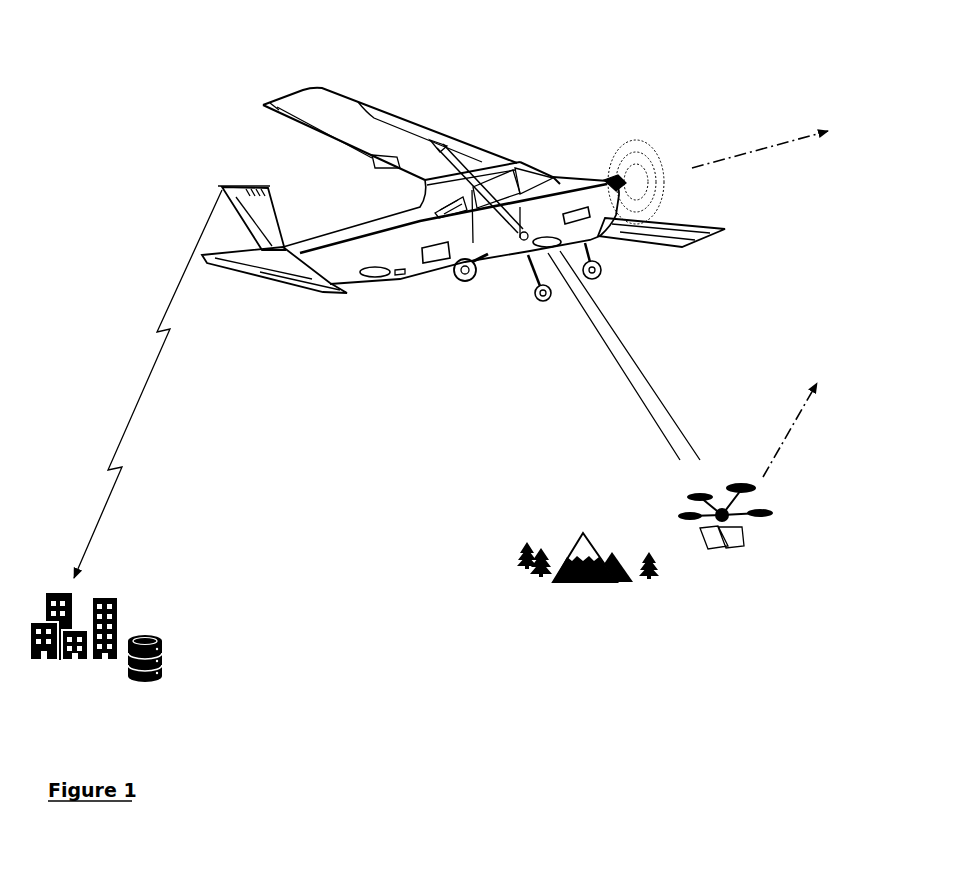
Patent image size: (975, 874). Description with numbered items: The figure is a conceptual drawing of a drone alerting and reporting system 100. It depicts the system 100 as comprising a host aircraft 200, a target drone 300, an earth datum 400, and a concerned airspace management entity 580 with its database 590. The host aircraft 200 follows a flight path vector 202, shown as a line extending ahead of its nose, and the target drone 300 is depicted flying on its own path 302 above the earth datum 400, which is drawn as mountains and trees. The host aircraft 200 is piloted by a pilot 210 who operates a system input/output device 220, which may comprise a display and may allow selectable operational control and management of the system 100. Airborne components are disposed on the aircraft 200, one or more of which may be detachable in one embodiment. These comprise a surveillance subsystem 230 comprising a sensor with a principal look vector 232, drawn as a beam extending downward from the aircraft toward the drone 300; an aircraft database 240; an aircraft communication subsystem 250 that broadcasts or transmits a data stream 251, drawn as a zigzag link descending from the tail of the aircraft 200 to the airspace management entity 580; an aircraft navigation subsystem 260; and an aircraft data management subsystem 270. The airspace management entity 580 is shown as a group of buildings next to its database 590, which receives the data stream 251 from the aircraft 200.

The drone alerting and reporting system 100 is at (193, 66).
The host aircraft 200 is at (684, 96).
The flight path vector 202 is at (784, 155).
The pilot 210 is at (539, 154).
The system input/output device 220 is at (463, 188).
The surveillance subsystem 230 is at (537, 253).
The principal look vector 232 is at (652, 388).
The aircraft database 240 is at (389, 274).
The aircraft communication subsystem 250 is at (236, 181).
The data stream 251 is at (148, 355).
The aircraft navigation subsystem 260 is at (589, 226).
The aircraft data management subsystem 270 is at (447, 261).
The target drone 300 is at (746, 557).
The UAV flight path 302 is at (799, 441).
The earth datum 400 is at (557, 529).
The concerned airspace management entity 580 is at (128, 583).
The database 590 is at (170, 637).